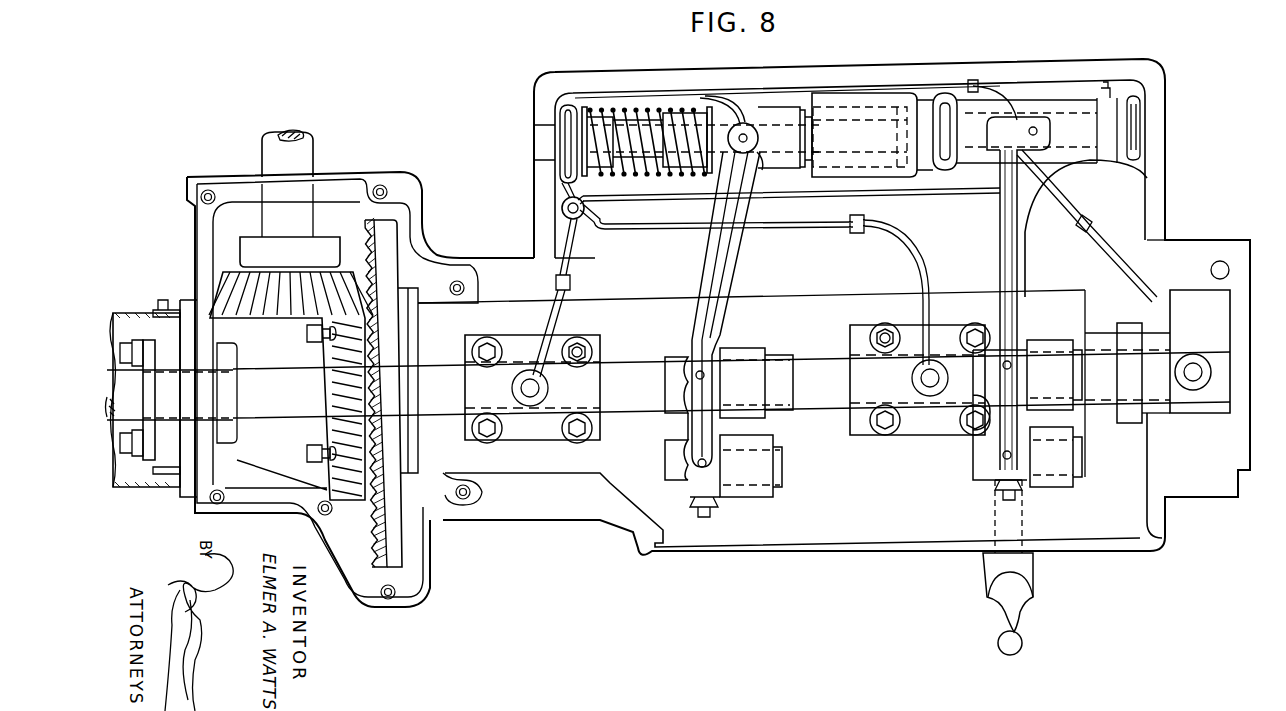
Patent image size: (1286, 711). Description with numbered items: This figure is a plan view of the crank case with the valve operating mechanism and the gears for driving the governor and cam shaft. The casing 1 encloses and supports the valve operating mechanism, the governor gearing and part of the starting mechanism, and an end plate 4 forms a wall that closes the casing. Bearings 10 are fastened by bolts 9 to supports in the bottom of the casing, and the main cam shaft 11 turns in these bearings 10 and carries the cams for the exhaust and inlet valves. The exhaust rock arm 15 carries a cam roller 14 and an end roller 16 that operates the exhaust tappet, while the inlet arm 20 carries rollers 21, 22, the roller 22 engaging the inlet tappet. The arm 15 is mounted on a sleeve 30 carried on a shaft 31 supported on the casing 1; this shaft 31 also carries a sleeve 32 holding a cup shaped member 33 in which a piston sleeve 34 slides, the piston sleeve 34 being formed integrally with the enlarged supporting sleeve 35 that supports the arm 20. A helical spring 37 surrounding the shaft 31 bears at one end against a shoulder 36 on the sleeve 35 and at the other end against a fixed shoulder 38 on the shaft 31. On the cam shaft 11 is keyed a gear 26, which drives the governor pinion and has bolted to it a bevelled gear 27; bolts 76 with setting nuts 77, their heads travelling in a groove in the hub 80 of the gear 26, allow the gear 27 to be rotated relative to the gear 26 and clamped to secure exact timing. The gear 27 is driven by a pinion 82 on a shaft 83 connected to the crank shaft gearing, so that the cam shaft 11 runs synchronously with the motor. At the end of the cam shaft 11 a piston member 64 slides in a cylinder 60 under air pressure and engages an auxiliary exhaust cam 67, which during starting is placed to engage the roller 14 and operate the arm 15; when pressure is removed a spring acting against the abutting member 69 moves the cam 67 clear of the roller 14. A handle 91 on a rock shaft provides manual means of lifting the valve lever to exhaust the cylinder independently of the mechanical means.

The casing 1 is at (1160, 180).
The end plate 4 is at (186, 292).
The bolts 9 is at (577, 348).
The bearings 10 is at (520, 352).
The main cam shaft 11 is at (830, 372).
The cam roller 14 is at (1060, 345).
The rock arm 15 is at (1022, 253).
The roller 16 is at (1060, 480).
The arm 20 is at (733, 260).
The roller 21 is at (750, 355).
The roller 22 is at (760, 455).
The gear 26 is at (393, 245).
The bevelled gear 27 is at (366, 280).
The sleeve 30 is at (1057, 100).
The shaft 31 is at (645, 128).
The sleeve 32 is at (920, 95).
The cup shaped member 33 is at (880, 95).
The piston sleeve 34 is at (840, 108).
The supporting sleeve 35 is at (768, 108).
The shoulder 36 is at (722, 100).
The helical spring 37 is at (627, 105).
The fixed shoulder 38 is at (584, 103).
The cylinder 60 is at (1187, 410).
The piston member 64 is at (1155, 405).
The auxiliary exhaust cam 67 is at (1128, 325).
The abutting member 69 is at (1095, 345).
The bolts 76 is at (312, 333).
The setting nuts 77 is at (325, 348).
The hub 80 is at (423, 305).
The pinion 82 is at (257, 250).
The shaft 83 is at (300, 160).
The handle 91 is at (1020, 627).